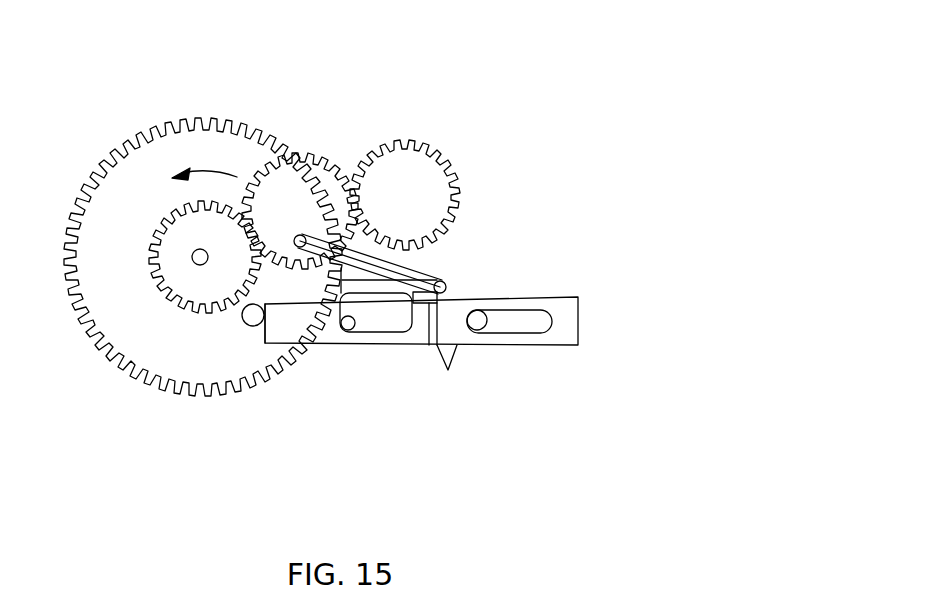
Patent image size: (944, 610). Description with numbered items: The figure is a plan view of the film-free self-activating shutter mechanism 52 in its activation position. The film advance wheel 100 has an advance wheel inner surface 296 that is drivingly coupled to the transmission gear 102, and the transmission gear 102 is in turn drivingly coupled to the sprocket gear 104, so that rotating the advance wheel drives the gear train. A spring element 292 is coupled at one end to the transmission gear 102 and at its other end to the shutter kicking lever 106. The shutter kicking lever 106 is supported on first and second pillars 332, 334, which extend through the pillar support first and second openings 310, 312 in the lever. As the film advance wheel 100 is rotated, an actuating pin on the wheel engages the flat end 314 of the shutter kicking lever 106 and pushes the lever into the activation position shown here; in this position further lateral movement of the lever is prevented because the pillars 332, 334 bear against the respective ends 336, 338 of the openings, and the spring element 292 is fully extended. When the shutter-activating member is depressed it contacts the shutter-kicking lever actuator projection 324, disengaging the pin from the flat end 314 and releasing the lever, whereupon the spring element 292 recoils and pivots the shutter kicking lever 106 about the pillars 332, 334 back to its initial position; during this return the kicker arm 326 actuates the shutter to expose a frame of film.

The shutter mechanism 52 is at (524, 76).
The film advance wheel 100 is at (128, 182).
The transmission gear 102 is at (289, 181).
The sprocket gear 104 is at (402, 160).
The shutter kicking lever 106 is at (598, 283).
The spring element 292 is at (422, 274).
The advance wheel inner surface 296 is at (243, 320).
The pillar support first opening 310 is at (397, 320).
The pillar support second opening 312 is at (553, 322).
The flat end 314 is at (264, 343).
The shutter-kicking lever actuator projection 324 is at (428, 345).
The kicker arm 326 is at (448, 370).
The first pillar 332 is at (348, 331).
The second pillar 334 is at (486, 330).
The end of first pillar support opening 336 is at (337, 292).
The end of second pillar support opening 338 is at (457, 303).